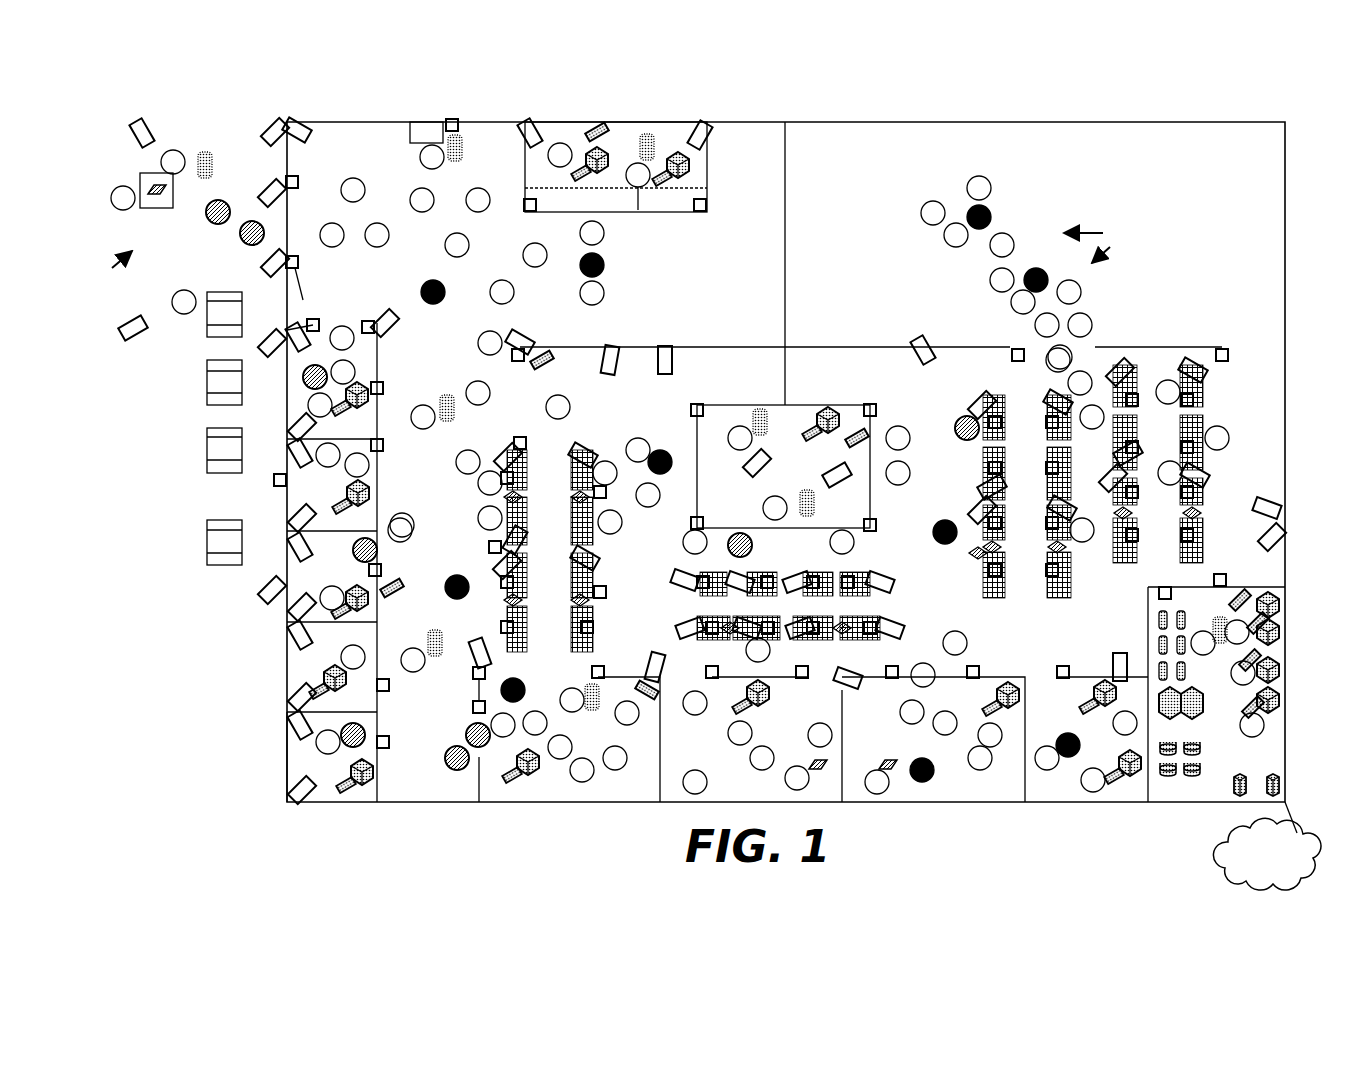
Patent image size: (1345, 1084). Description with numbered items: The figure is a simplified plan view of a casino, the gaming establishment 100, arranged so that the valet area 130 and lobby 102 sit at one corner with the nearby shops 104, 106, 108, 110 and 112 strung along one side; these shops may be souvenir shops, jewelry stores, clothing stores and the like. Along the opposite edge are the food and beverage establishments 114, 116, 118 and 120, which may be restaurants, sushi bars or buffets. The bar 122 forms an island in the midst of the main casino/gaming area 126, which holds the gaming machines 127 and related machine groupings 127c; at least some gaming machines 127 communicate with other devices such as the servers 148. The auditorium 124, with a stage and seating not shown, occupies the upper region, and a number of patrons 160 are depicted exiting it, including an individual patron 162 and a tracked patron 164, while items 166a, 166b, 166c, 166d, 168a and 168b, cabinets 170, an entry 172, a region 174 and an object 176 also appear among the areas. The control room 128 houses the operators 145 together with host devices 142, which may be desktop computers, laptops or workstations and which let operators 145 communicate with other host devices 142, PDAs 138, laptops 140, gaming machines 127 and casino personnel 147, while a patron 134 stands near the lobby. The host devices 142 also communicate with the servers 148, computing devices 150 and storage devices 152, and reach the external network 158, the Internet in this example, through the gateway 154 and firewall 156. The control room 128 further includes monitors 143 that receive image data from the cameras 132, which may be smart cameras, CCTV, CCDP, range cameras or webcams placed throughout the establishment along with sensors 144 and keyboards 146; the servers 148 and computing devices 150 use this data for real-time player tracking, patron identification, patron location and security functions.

The gaming establishment 100 is at (259, 806).
The lobby 102 is at (652, 263).
The shop 104 is at (332, 562).
The shop 106 is at (332, 505).
The shop 108 is at (332, 591).
The shop 110 is at (332, 681).
The shop 112 is at (309, 757).
The food and beverage establishment 114 is at (569, 739).
The food and beverage establishment 116 is at (777, 739).
The food and beverage establishment 118 is at (933, 739).
The food and beverage establishment 120 is at (1100, 734).
The bar 122 is at (783, 466).
The auditorium 124 is at (1009, 241).
The main casino/gaming area 126 is at (809, 501).
The gaming machines 127 is at (586, 531).
The tables 127c is at (753, 572).
The control room 128 is at (1216, 694).
The valet area 130 is at (113, 272).
The cameras 132 is at (140, 125).
The person 134 is at (125, 186).
The PDAs 138 is at (200, 150).
The laptops 140 is at (150, 210).
The host devices 142 is at (678, 150).
The monitors 143 is at (568, 165).
The sensors 144 is at (298, 180).
The operators 145 is at (1245, 637).
The keyboard 146 is at (604, 128).
The casino personnel 147 is at (421, 430).
The servers 148 is at (1180, 611).
The computing devices 150 is at (1196, 698).
The storage devices 152 is at (1199, 750).
The gateway 154 is at (1228, 796).
The firewall 156 is at (1265, 796).
The external network 158 is at (1213, 850).
The patrons 160 is at (1110, 244).
The person 162 is at (930, 210).
The tracked person 164 is at (1035, 267).
The asset 166a is at (209, 223).
The asset 166b is at (466, 730).
The asset 166c is at (740, 532).
The asset 166d is at (380, 552).
The asset 168a is at (244, 245).
The asset 168b is at (449, 768).
The cabinets 170 is at (207, 440).
The door 172 is at (430, 148).
The area 174 is at (532, 167).
The object 176 is at (975, 556).